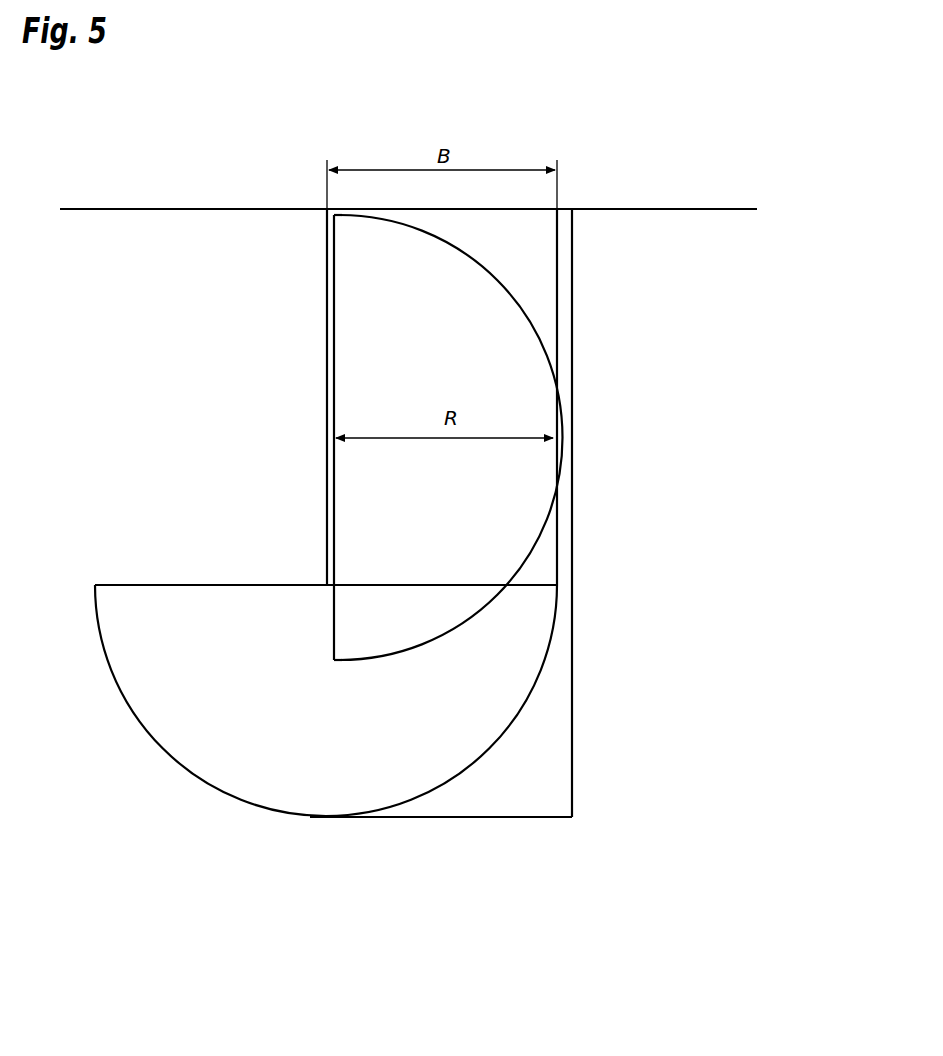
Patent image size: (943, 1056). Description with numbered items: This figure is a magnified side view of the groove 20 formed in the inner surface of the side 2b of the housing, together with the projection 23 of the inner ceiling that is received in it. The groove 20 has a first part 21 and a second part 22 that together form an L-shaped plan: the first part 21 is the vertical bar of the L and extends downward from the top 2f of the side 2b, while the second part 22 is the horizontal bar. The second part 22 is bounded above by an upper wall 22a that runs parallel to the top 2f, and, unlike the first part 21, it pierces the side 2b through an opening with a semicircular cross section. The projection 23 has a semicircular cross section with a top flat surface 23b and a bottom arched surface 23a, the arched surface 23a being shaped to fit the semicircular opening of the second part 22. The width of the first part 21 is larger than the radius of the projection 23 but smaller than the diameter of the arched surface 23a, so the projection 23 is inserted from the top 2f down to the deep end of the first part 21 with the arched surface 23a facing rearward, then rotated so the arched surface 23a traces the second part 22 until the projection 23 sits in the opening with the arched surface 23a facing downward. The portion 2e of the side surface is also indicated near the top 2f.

The side 2b is at (408, 168).
The wall surface portion 2e is at (170, 182).
The top 2f is at (255, 174).
The groove 20 is at (471, 513).
The first part 21 is at (589, 397).
The second part 22 is at (326, 709).
The upper wall 22a is at (326, 554).
The projection 23 is at (438, 437).
The arched surface 23a is at (492, 437).
The top flat surface 23b is at (283, 437).